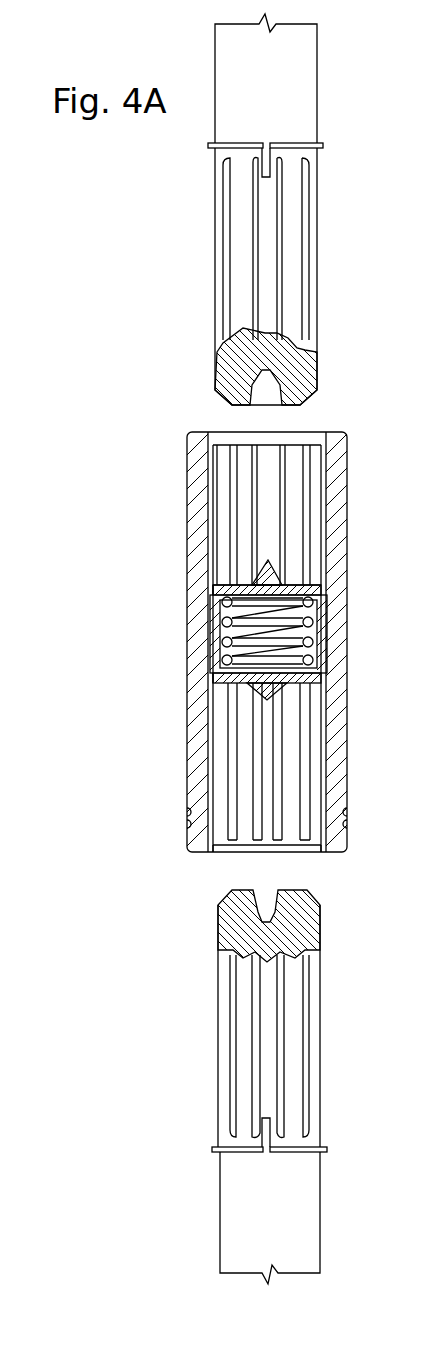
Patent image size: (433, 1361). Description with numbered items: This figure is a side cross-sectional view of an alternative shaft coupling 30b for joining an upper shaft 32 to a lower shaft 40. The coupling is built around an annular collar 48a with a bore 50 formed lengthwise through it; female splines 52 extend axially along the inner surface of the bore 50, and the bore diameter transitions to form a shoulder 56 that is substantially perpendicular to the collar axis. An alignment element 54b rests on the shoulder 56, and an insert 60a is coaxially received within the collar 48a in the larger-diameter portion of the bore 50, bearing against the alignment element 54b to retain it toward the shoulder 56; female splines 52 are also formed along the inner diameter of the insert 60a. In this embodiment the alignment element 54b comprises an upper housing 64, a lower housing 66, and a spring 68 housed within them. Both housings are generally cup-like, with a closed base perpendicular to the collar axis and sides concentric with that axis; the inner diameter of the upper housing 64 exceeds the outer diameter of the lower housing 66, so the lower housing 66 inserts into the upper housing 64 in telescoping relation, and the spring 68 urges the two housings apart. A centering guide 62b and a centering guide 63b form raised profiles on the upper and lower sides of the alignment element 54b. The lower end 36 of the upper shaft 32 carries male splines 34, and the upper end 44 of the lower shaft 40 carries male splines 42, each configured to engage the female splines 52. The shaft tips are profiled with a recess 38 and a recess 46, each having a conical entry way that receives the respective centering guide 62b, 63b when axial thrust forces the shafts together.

The shaft coupling 30b is at (218, 664).
The upper shaft 32 is at (282, 106).
The male splines 34 is at (311, 222).
The lower end 36 is at (240, 283).
The recess 38 is at (268, 398).
The lower shaft 40 is at (286, 1220).
The male splines 42 is at (296, 978).
The upper end 44 is at (253, 1006).
The recess 46 is at (268, 900).
The collar 48a is at (197, 780).
The bore 50 is at (222, 862).
The female splines 52 is at (245, 810).
The alignment element 54b is at (228, 698).
The shoulder 56 is at (326, 660).
The insert 60a is at (213, 455).
The centering guide 62b is at (300, 568).
The centering guide 63b is at (282, 700).
The upper housing 64 is at (205, 590).
The lower housing 66 is at (215, 676).
The spring 68 is at (222, 622).